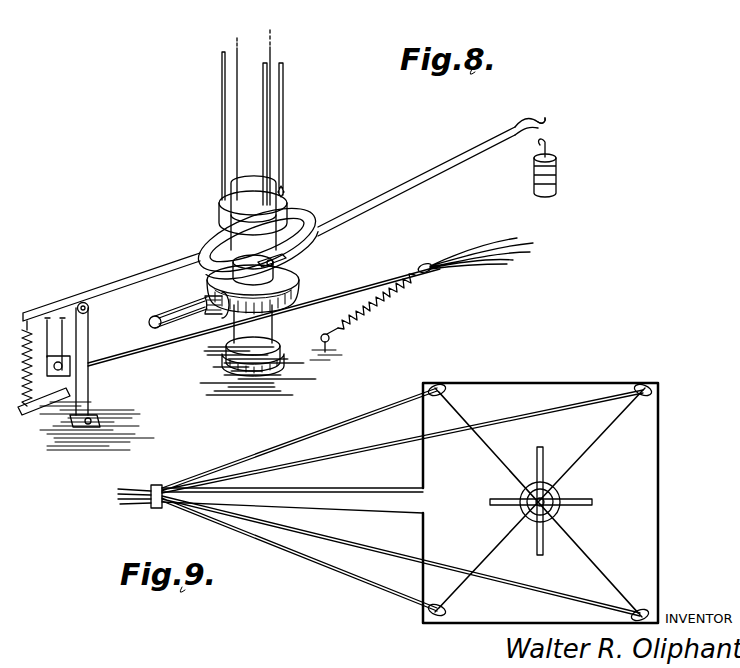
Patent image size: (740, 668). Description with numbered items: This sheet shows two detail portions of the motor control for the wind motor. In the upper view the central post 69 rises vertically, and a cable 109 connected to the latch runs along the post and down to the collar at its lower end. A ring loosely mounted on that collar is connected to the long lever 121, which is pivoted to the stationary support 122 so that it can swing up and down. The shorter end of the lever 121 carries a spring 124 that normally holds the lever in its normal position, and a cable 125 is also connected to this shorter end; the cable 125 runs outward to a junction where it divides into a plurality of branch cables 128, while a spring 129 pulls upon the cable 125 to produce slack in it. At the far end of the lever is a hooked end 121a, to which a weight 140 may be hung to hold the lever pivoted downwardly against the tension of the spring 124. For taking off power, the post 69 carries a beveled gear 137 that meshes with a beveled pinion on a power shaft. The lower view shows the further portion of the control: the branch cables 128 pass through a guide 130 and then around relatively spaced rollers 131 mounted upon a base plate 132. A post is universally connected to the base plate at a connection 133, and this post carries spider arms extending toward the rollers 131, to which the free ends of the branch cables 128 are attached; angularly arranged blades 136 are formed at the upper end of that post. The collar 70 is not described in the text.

In FIG. 8, the post 69 is at (248, 131).
In FIG. 8, the cable 109 is at (258, 160).
In FIG. 8, the lever 121 is at (284, 219).
In FIG. 8, the hooked end 121a is at (548, 122).
In FIG. 8, the weight 140 is at (556, 174).
In FIG. 8, the stationary support 122 is at (90, 348).
In FIG. 8, the spring 124 is at (20, 333).
In FIG. 8, the cable 125 is at (97, 364).
In FIG. 8, the branch cables 128 is at (530, 243).
In FIG. 9, the branch cables 128 is at (360, 577).
In FIG. 8, the spring 129 is at (357, 316).
In FIG. 8, the beveled gear 137 is at (300, 277).
In FIG. 8, the blades 136 is at (205, 297).
In FIG. 8, the base collar 70 is at (252, 370).
In FIG. 9, the rollers 131 is at (445, 622).
In FIG. 9, the base plate 132 is at (564, 501).
In FIG. 9, the universal connection 133 is at (558, 494).
In FIG. 9, the guide 130 is at (152, 507).